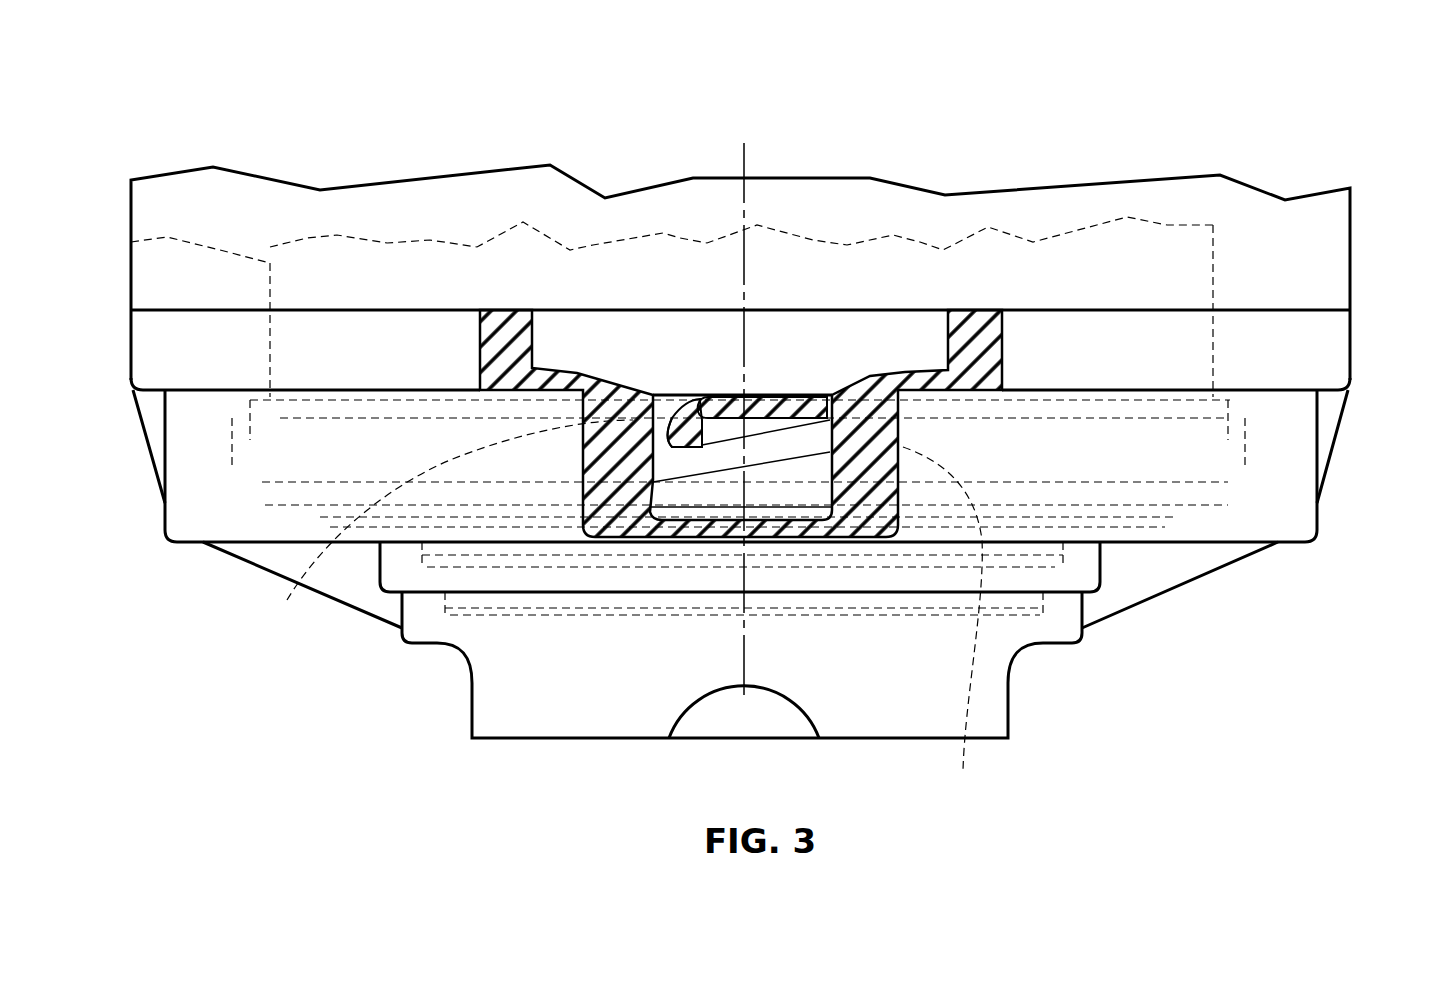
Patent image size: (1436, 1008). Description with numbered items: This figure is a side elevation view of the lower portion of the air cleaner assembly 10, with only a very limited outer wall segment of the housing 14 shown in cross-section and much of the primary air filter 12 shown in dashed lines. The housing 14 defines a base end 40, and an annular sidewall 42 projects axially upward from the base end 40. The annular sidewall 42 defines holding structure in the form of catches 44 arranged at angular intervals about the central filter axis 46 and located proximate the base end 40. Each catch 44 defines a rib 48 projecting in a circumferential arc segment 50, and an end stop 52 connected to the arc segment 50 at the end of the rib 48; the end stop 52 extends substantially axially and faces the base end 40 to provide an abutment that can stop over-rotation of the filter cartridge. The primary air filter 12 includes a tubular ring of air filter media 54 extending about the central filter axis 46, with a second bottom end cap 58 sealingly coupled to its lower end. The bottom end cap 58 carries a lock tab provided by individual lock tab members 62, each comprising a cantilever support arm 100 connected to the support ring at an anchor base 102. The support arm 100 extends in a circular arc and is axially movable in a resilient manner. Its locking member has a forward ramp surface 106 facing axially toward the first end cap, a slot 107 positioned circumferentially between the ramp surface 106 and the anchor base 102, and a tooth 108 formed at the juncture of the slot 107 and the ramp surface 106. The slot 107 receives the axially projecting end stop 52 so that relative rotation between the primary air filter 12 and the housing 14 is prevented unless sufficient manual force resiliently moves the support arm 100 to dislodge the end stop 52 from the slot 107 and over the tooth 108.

The air cleaner assembly 10 is at (1145, 665).
The primary air filter 12 is at (1217, 255).
The housing 14 is at (1320, 367).
The base end 40 is at (1188, 565).
The annular sidewall 42 is at (1350, 228).
The catch 44 is at (760, 403).
The central filter axis 46 is at (744, 165).
The rib 48 is at (703, 398).
The arc segment 50 is at (807, 397).
The end stop 52 is at (660, 387).
The air filter media 54 is at (131, 242).
The second bottom end cap 58 is at (236, 502).
The lock tab member 62 is at (780, 440).
The cantilever support arm 100 is at (720, 453).
The anchor base 102 is at (947, 628).
The ramp surface 106 is at (446, 528).
The slot 107 is at (683, 405).
The tooth 108 is at (668, 440).